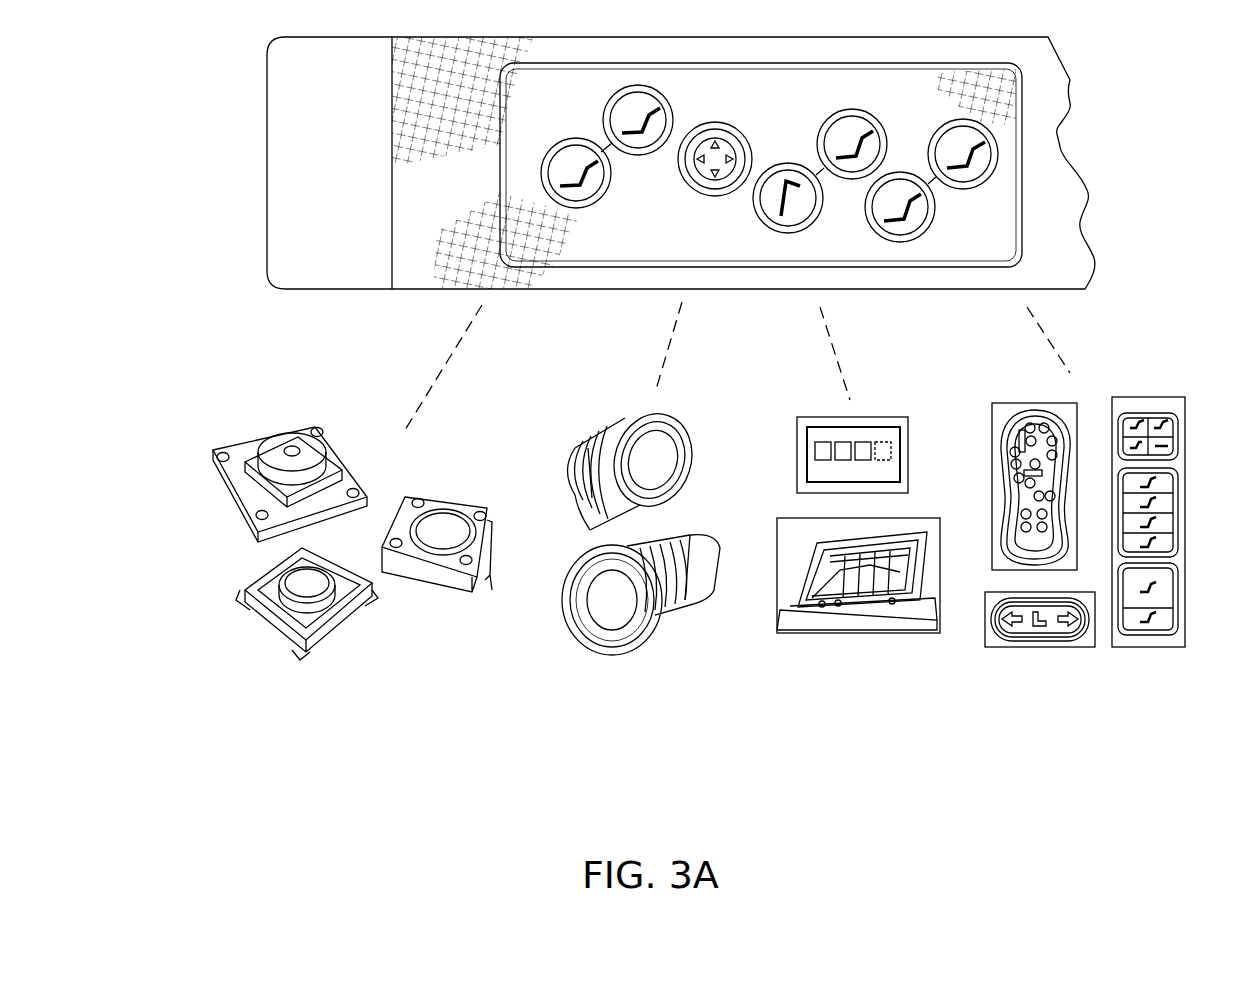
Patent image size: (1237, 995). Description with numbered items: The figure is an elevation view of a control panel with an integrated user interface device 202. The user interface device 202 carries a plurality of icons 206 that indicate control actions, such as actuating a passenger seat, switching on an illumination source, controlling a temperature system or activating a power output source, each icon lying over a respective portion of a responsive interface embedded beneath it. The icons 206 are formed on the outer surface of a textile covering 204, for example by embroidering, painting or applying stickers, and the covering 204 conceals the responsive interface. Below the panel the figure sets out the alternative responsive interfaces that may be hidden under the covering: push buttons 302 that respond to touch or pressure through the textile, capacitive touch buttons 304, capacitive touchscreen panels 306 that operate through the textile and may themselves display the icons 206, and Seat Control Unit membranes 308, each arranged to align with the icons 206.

The user interface device 202 is at (1017, 87).
The textile covering 204 is at (403, 78).
The plurality of icons 206 is at (985, 143).
The push buttons 302 is at (208, 656).
The capacitive touch buttons 304 is at (525, 656).
The capacitive touchscreen panels 306 is at (770, 657).
The Seat Control Unit (SCU) membranes 308 is at (977, 657).